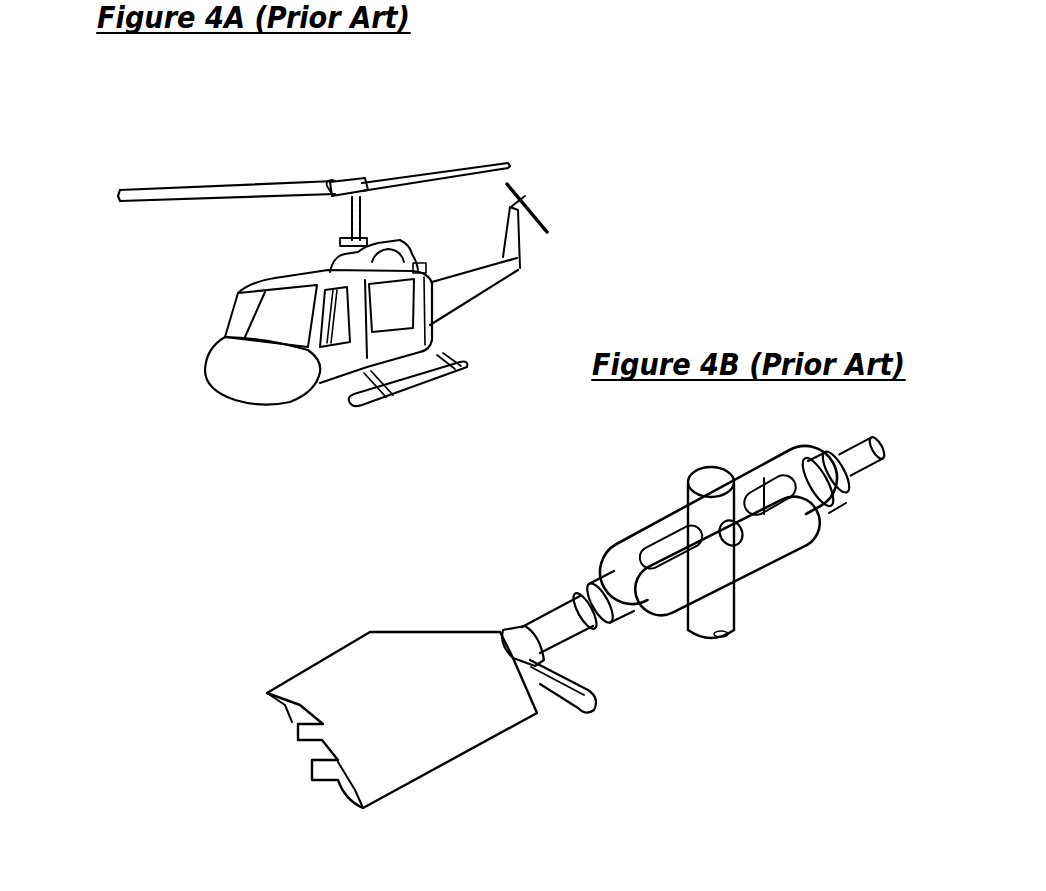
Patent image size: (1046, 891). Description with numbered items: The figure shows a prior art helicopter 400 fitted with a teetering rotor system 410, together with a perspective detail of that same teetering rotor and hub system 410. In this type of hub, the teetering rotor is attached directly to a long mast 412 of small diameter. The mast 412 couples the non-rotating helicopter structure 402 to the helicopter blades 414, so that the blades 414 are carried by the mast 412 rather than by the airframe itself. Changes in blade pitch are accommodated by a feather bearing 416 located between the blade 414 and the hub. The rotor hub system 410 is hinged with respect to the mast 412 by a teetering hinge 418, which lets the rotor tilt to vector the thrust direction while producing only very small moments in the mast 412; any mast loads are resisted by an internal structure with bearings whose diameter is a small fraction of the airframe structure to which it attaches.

In FIG. 4A, the helicopter 400 is at (175, 382).
In FIG. 4A, the non-rotating helicopter structure 402 is at (414, 246).
In FIG. 4A, the teetering rotor system 410 is at (343, 158).
In FIG. 4B, the teetering rotor system 410 is at (634, 488).
In FIG. 4A, the mast 412 is at (350, 218).
In FIG. 4B, the mast 412 is at (740, 630).
In FIG. 4B, the helicopter blades 414 is at (345, 658).
In FIG. 4B, the feather bearing 416 is at (570, 580).
In FIG. 4B, the teetering hinge 418 is at (748, 542).